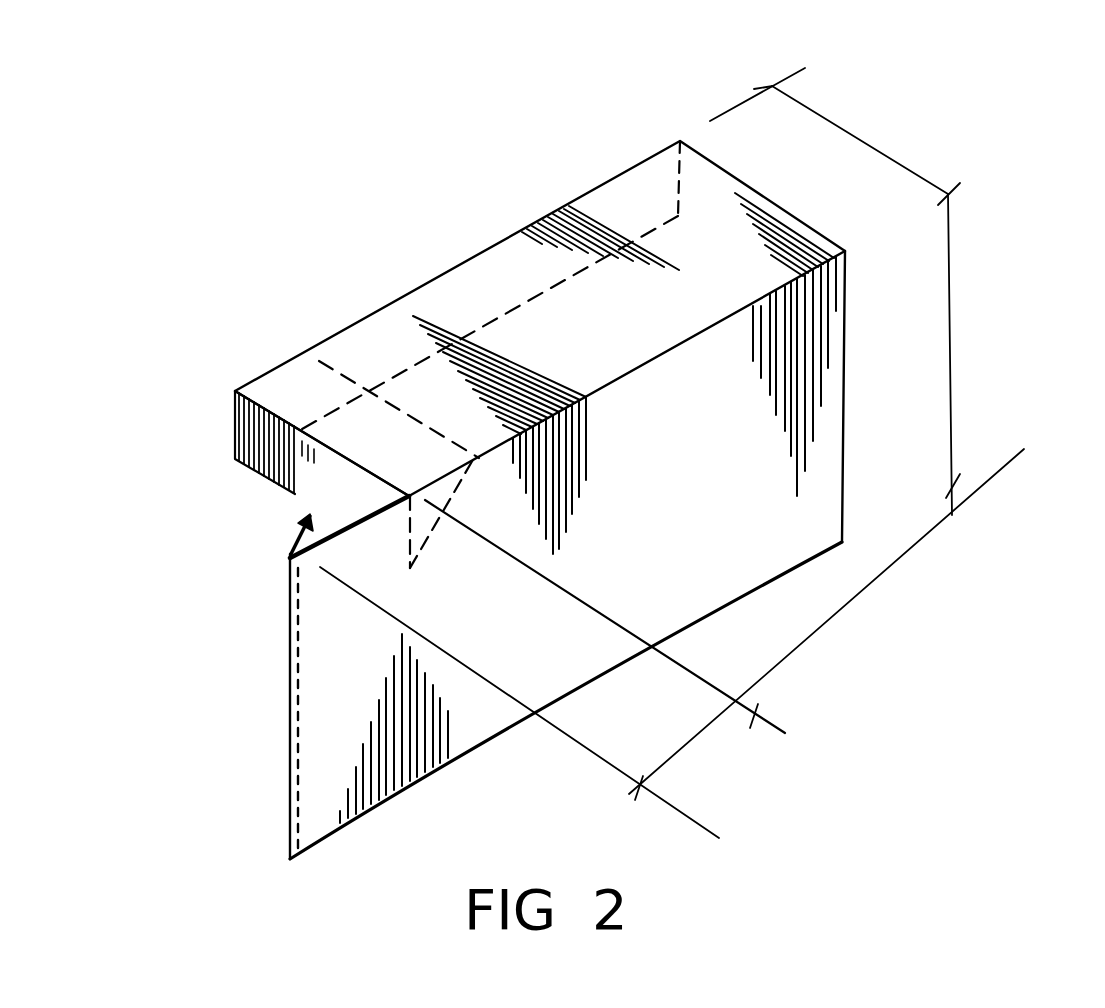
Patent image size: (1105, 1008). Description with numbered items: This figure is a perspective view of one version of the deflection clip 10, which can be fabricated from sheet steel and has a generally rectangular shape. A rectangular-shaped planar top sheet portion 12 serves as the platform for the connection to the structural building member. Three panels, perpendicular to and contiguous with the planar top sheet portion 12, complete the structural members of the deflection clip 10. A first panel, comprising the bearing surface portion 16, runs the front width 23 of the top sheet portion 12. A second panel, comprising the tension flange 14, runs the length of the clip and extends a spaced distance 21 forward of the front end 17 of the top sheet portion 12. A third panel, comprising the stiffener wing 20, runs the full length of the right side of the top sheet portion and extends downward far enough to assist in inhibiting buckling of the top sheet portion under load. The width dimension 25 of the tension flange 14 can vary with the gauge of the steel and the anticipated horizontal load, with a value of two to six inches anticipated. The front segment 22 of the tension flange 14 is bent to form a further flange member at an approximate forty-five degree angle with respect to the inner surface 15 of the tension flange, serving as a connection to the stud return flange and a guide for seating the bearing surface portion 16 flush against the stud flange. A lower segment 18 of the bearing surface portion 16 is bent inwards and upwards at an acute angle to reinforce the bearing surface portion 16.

The deflection clip 10 is at (810, 572).
The planar top sheet portion 12 is at (720, 210).
The tension flange 14 is at (703, 583).
The inner surface of the tension flange 15 is at (318, 514).
The bearing surface portion 16 is at (305, 473).
The front end of the top sheet portion 17 is at (233, 390).
The lower segment of the bearing surface portion 18 is at (461, 493).
The stiffener wing 20 is at (453, 297).
The spaced distance 21 is at (693, 753).
The front segment of the tension flange 22 is at (288, 523).
The front width of the top sheet portion 23 is at (908, 164).
The width dimension of the tension flange 25 is at (950, 347).